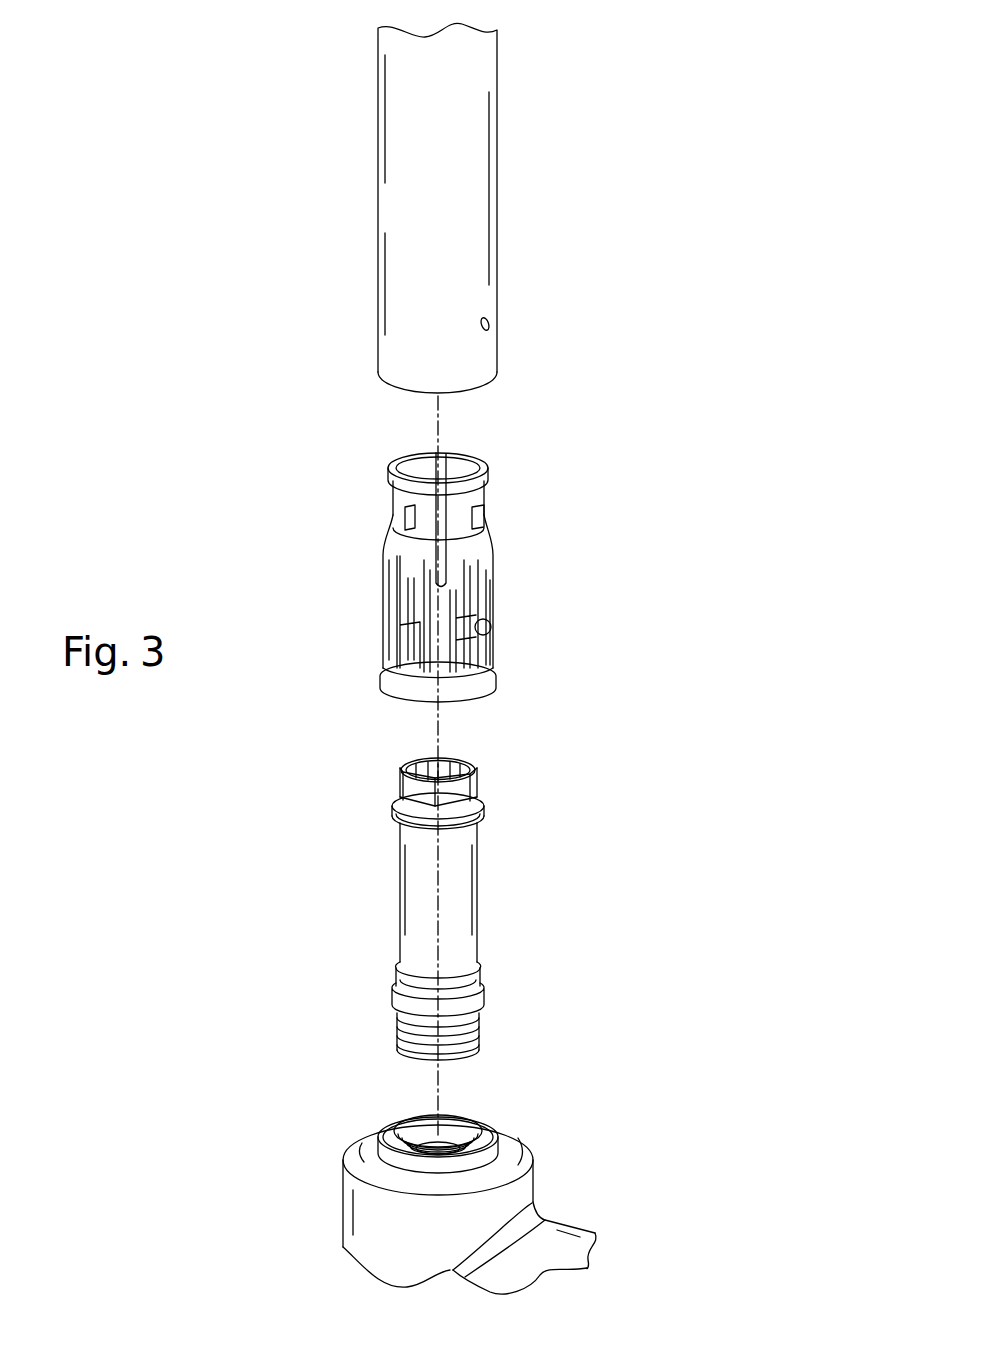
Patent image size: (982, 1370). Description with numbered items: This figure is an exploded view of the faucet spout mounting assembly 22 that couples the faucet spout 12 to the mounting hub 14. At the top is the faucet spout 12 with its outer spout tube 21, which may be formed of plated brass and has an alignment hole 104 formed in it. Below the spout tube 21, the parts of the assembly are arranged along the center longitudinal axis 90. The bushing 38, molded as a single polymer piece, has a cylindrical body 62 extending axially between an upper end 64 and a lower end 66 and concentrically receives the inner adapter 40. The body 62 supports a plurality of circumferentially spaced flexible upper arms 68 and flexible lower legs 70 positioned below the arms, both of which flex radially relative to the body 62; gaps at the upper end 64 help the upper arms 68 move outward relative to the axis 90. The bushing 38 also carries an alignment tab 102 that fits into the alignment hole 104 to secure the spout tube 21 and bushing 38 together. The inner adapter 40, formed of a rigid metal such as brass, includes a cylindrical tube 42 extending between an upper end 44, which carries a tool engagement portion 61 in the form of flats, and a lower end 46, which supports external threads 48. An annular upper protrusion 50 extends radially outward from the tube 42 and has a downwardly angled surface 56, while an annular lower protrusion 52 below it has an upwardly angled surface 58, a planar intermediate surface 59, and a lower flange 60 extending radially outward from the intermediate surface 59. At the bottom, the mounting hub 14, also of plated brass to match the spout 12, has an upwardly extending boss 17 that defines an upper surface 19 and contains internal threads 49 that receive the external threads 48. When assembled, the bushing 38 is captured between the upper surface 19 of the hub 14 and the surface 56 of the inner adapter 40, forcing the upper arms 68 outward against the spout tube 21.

The faucet spout 12 is at (454, 206).
The outer spout tube 21 is at (400, 210).
The alignment hole 104 is at (490, 325).
The faucet spout mounting assembly 22 is at (730, 114).
The center longitudinal axis 90 is at (437, 428).
The bushing 38 is at (443, 554).
The upper end 64 is at (356, 468).
The flexible upper arms 68 is at (400, 508).
The cylindrical body 62 is at (483, 537).
The alignment tab 102 is at (491, 620).
The flexible lower legs 70 is at (400, 655).
The lower end 66 is at (503, 676).
The inner adapter 40 is at (487, 917).
The tool engagement portion 61 is at (466, 758).
The upper end 44 is at (415, 764).
The annular upper protrusion 50 is at (380, 840).
The downwardly angled surface 56 is at (415, 826).
The cylindrical tube 42 is at (478, 895).
The annular lower protrusion 52 is at (448, 947).
The upwardly angled surface 58 is at (400, 966).
The planar intermediate surface 59 is at (468, 993).
The lower flange 60 is at (393, 1003).
The external threads 48 is at (432, 1058).
The lower end 46 is at (382, 1052).
The mounting hub 14 is at (428, 1183).
The boss 17 is at (385, 1152).
The upper surface 19 is at (501, 1107).
The internal threads 49 is at (466, 1120).